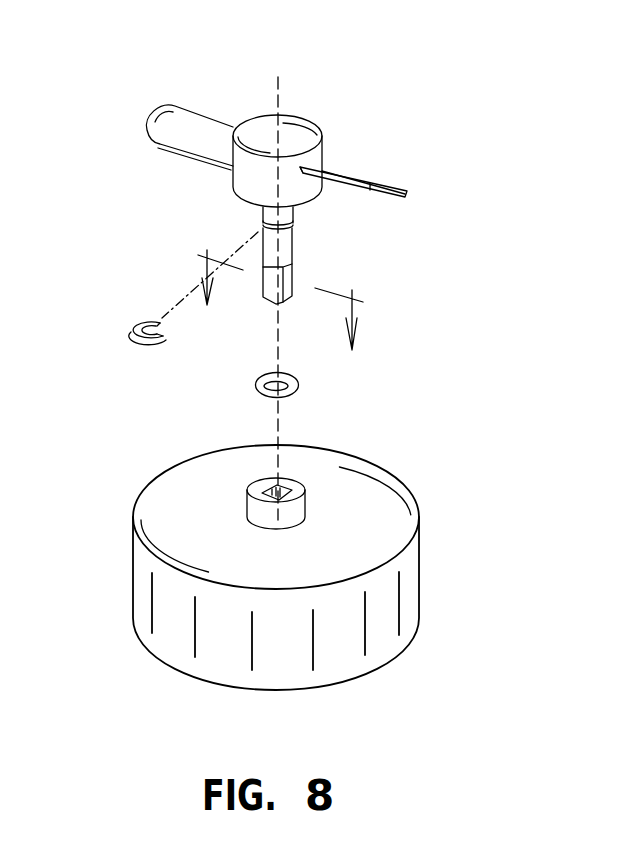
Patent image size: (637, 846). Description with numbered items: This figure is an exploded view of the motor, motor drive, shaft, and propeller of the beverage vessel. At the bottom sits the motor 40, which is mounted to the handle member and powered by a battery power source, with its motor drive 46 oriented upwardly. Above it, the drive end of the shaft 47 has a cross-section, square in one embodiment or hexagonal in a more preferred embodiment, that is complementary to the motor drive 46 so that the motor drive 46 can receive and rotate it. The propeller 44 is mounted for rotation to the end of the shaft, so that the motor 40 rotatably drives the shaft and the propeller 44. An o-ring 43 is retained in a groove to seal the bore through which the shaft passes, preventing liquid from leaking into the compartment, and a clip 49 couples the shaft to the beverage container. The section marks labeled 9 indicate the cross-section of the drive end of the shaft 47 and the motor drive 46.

The motor 40 is at (420, 577).
The o-ring 43 is at (298, 385).
The propeller 44 is at (196, 130).
The motor drive 46 is at (247, 506).
The drive end of the shaft 47 is at (294, 277).
The clip 49 is at (131, 332).
The section line for FIG. 9 is at (279, 284).